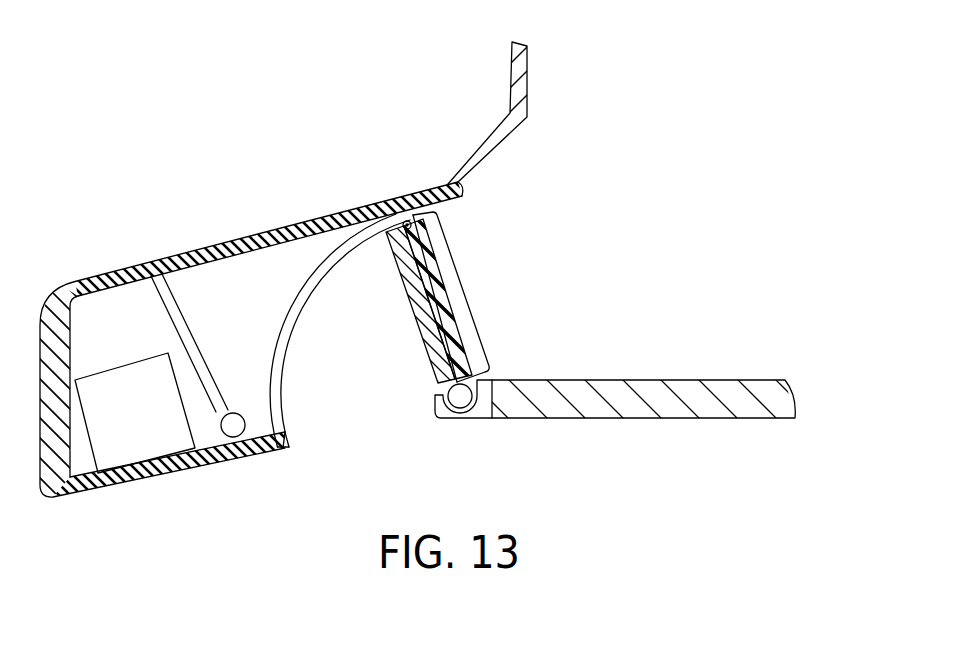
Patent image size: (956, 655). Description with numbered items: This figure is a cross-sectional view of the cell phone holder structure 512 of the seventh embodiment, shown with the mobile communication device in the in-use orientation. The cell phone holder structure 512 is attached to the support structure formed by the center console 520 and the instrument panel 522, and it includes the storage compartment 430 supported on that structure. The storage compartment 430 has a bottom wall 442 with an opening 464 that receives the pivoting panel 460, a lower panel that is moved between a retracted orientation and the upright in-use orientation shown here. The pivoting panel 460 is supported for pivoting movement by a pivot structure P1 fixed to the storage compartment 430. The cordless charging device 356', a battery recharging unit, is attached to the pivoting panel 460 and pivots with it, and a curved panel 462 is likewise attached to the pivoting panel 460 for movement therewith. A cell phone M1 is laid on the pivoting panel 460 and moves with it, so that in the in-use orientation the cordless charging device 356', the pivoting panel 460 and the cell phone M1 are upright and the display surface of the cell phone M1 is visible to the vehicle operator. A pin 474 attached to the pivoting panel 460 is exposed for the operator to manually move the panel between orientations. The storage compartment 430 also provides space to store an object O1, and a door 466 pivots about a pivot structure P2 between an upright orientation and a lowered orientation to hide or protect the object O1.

The cell phone holder structure 512 is at (680, 184).
The storage compartment 430 is at (201, 240).
The instrument panel 522 is at (518, 78).
The door 466 is at (180, 326).
The pivot structure P2 is at (234, 425).
The object O1 is at (145, 437).
The curved panel 462 is at (283, 348).
The bottom wall 442 is at (262, 424).
The opening 464 is at (289, 440).
The pin 474 is at (412, 227).
The cordless charging device 356' is at (417, 304).
The pivoting panel 460 is at (425, 288).
The cell phone M1 is at (465, 334).
The pivot structure P1 is at (460, 397).
The center console 520 is at (741, 379).